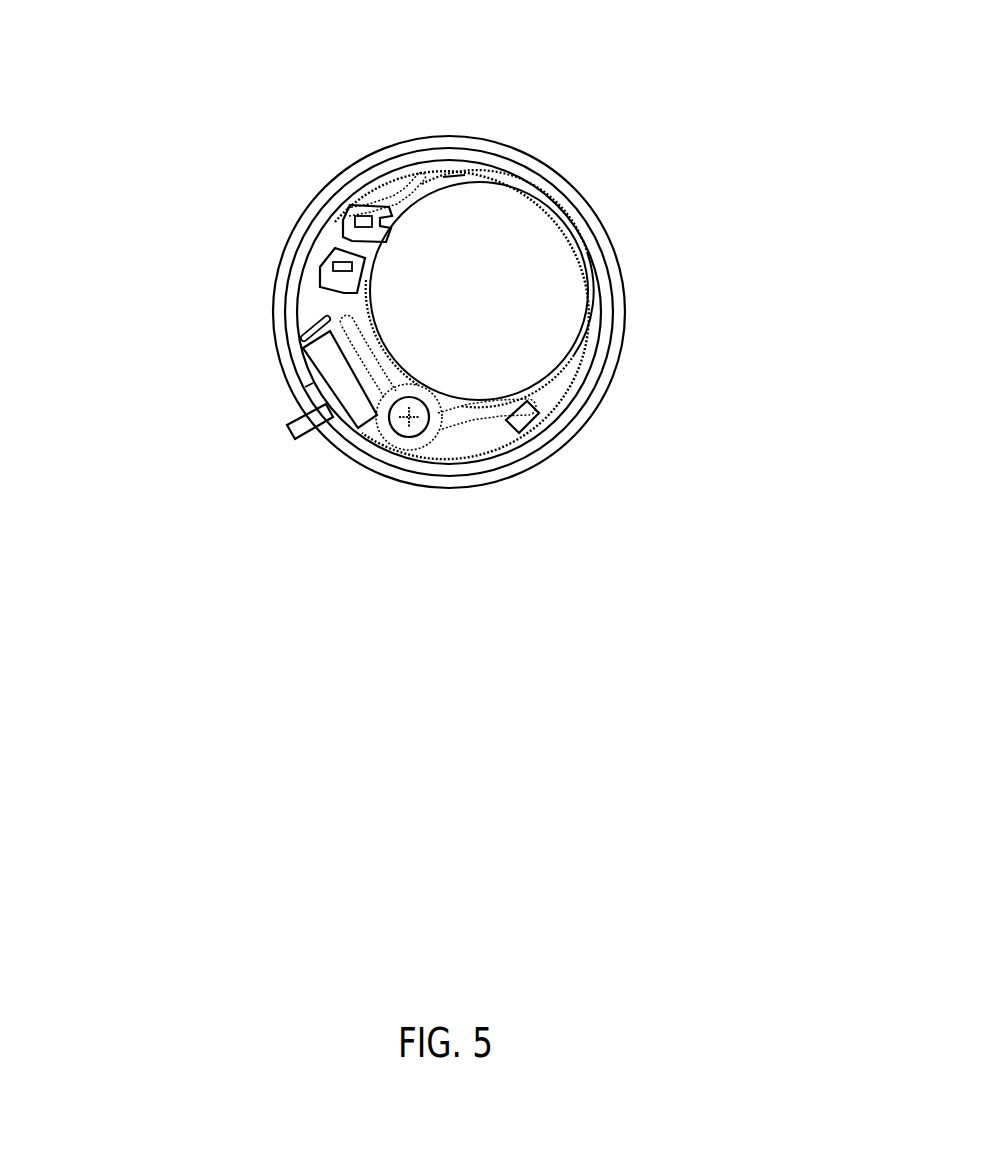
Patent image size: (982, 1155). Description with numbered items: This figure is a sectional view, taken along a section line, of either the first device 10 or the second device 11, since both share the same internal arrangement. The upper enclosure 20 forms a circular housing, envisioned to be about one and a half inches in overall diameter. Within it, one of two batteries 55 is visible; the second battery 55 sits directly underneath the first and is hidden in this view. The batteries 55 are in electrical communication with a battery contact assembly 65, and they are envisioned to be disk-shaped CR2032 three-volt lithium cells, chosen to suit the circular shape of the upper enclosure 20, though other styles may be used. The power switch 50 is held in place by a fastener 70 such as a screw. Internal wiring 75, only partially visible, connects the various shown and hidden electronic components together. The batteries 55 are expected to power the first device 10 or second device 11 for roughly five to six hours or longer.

The first device 10 is at (147, 547).
The second device 11 is at (462, 331).
The upper enclosure 20 is at (623, 268).
The power switch 50 is at (293, 437).
The battery 55 is at (463, 252).
The battery contact assembly 65 is at (353, 247).
The fastener 70 is at (430, 428).
The internal wiring 75 is at (548, 398).